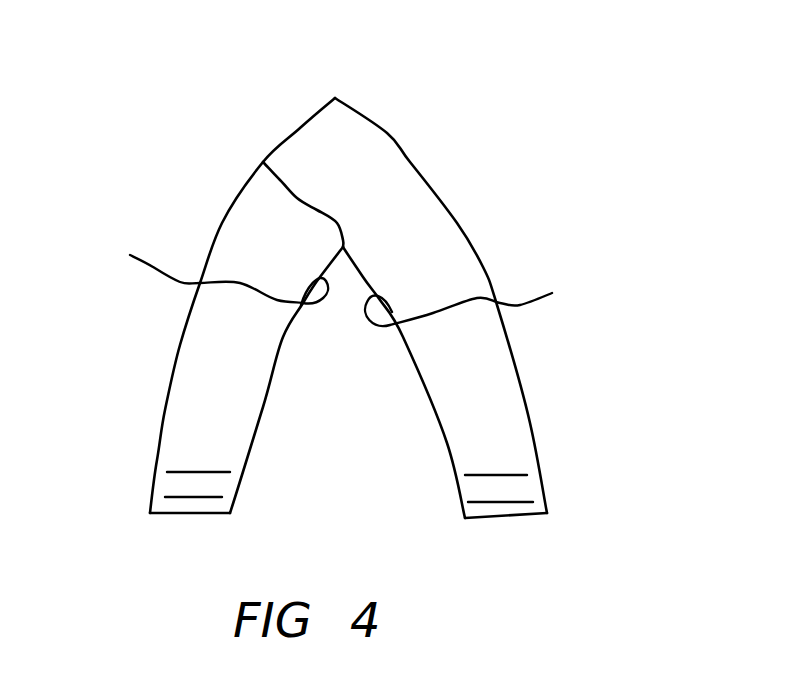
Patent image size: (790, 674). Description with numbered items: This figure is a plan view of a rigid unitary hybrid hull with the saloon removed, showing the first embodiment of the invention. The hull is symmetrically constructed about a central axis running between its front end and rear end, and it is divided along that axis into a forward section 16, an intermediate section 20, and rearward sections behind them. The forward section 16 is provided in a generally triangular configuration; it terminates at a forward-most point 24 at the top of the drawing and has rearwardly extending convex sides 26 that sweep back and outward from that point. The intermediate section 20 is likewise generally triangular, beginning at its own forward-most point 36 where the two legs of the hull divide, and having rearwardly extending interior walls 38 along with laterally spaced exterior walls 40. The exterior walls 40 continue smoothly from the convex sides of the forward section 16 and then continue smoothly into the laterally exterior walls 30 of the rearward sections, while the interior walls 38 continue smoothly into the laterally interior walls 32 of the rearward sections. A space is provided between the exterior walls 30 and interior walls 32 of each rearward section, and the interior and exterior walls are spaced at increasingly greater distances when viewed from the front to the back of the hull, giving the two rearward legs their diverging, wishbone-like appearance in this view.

The forward section 16 is at (357, 178).
The intermediate section 20 is at (413, 257).
The forward-most point 24 is at (335, 98).
The convex sides 26 is at (387, 133).
The laterally exterior walls 30 is at (163, 417).
The laterally interior walls 32 is at (248, 450).
The forward-most point 36 is at (263, 162).
The interior walls 38 is at (334, 282).
The exterior walls 40 is at (222, 222).